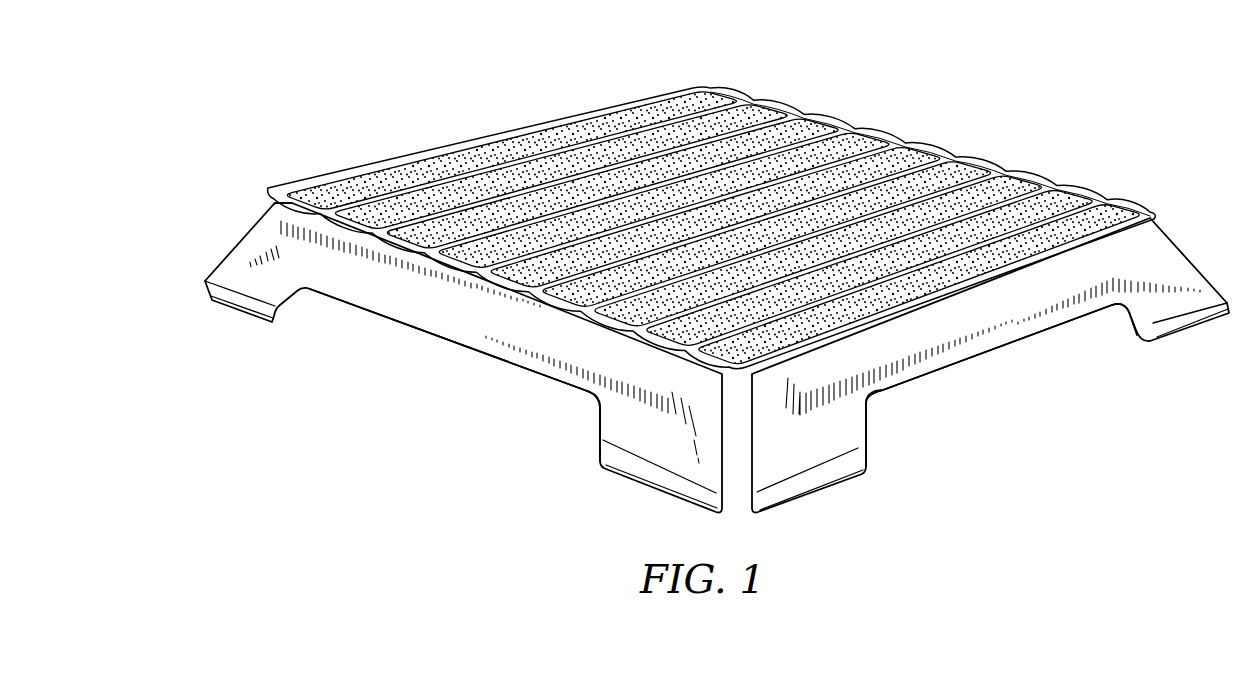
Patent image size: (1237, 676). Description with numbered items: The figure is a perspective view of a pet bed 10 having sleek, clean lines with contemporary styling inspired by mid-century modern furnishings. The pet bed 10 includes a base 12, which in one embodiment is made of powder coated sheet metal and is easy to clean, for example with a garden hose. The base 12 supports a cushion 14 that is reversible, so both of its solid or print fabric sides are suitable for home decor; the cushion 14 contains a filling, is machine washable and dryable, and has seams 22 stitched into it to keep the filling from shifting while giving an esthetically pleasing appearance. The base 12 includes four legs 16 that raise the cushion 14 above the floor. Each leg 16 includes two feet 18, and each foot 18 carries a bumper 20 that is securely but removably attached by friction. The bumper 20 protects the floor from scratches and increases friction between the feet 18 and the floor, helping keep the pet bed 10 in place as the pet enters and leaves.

The pet bed 10 is at (391, 96).
The base 12 is at (244, 249).
The cushion 14 is at (958, 160).
The legs 16 is at (463, 327).
The feet 18 is at (610, 422).
The bumper 20 is at (242, 300).
The seams 22 is at (851, 128).